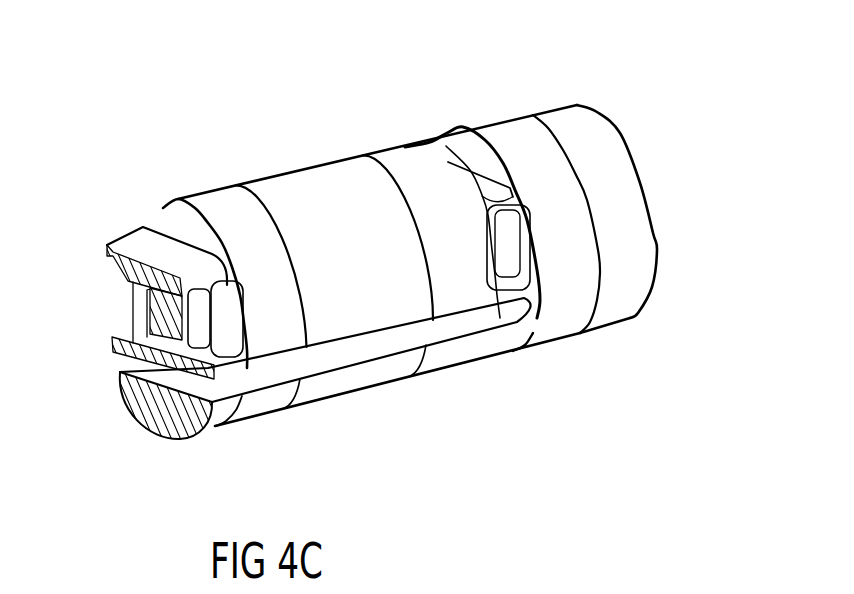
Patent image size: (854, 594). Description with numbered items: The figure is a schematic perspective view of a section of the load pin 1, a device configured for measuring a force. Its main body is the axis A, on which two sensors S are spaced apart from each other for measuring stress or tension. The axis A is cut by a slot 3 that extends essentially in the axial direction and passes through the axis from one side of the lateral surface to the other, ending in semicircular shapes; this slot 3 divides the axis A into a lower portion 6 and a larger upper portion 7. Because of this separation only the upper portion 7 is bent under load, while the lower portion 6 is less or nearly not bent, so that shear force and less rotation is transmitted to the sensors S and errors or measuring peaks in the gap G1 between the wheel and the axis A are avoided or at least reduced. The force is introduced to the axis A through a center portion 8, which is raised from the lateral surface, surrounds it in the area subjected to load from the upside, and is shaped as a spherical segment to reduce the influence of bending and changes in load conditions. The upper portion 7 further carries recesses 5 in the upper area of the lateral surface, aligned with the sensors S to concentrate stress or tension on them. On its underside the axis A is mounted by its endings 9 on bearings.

The load pin 1 is at (166, 153).
The slot 3 is at (422, 338).
The recesses 5 is at (143, 247).
The lower portion 6 is at (357, 185).
The upper portion 7 is at (370, 378).
The center portion 8 is at (283, 183).
The endings 9 is at (525, 132).
The axis A is at (627, 138).
The gap G1 is at (657, 208).
The sensors S is at (172, 318).